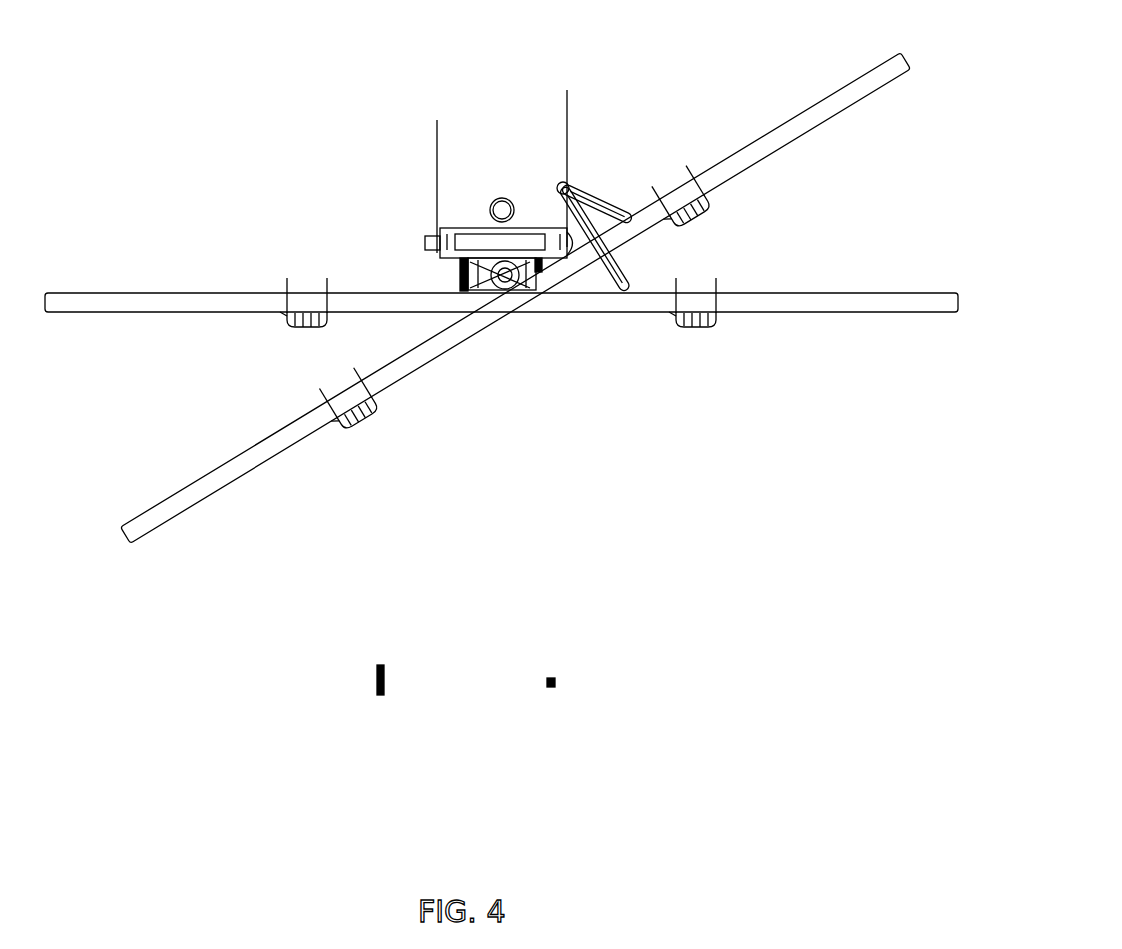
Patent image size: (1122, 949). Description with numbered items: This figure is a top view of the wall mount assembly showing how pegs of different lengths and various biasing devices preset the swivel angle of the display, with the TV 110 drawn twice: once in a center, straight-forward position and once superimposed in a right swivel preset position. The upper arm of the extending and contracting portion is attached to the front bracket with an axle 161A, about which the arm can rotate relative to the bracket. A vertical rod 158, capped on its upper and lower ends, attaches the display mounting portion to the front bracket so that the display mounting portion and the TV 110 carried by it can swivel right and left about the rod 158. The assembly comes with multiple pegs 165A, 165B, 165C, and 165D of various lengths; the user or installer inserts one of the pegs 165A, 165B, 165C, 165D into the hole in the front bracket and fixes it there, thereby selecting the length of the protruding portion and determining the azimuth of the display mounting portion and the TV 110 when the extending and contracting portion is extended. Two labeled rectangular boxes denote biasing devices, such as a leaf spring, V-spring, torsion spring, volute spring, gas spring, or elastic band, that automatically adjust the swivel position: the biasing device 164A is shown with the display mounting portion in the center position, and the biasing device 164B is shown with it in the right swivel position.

The TV 110 is at (294, 416).
The rod 158 is at (495, 281).
The axle 161A is at (427, 233).
The biasing device 164A is at (618, 265).
The biasing device 164B is at (598, 198).
The peg 165A is at (458, 274).
The peg 165B is at (540, 278).
The peg 165C is at (382, 660).
The peg 165D is at (552, 675).